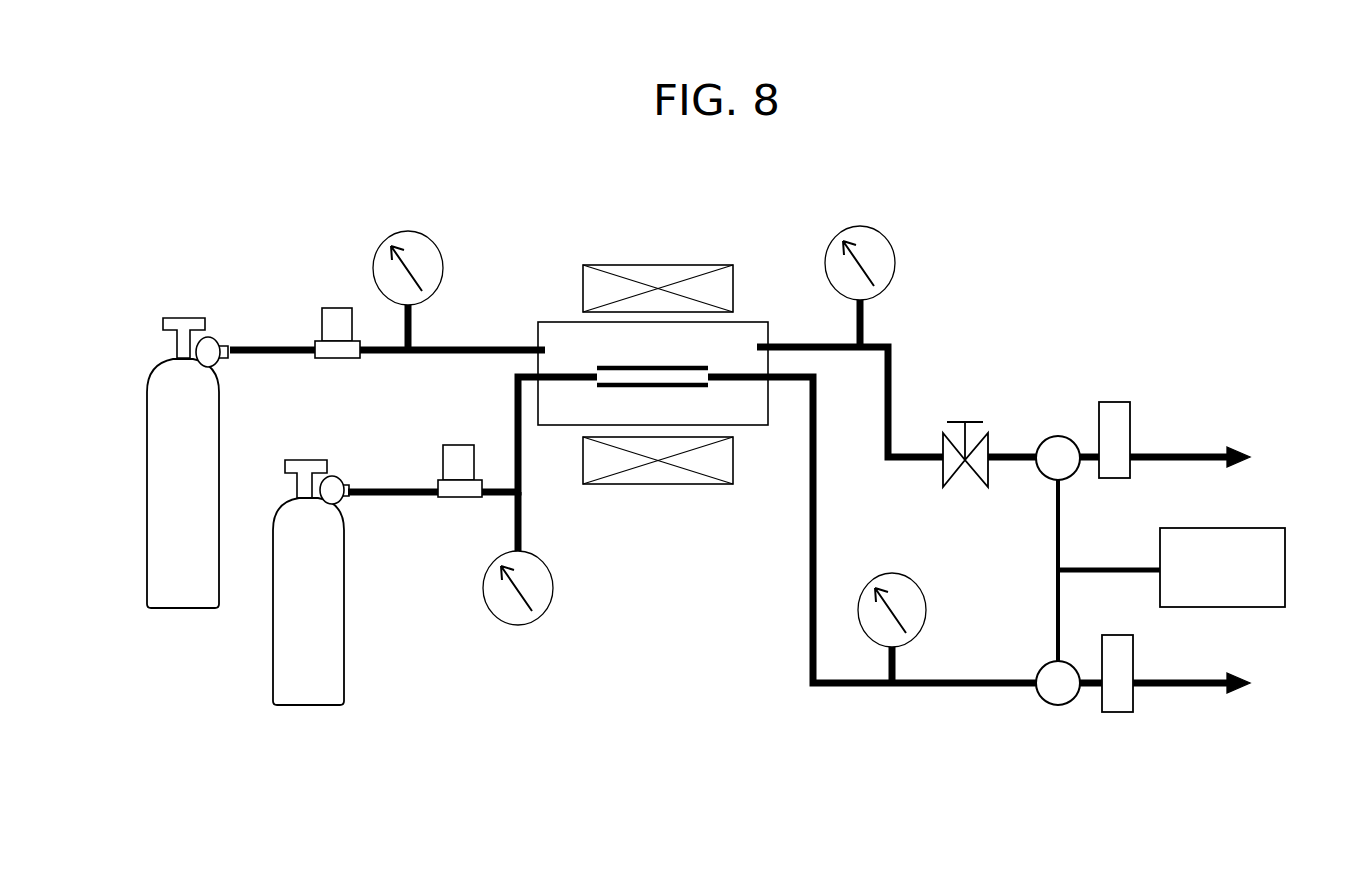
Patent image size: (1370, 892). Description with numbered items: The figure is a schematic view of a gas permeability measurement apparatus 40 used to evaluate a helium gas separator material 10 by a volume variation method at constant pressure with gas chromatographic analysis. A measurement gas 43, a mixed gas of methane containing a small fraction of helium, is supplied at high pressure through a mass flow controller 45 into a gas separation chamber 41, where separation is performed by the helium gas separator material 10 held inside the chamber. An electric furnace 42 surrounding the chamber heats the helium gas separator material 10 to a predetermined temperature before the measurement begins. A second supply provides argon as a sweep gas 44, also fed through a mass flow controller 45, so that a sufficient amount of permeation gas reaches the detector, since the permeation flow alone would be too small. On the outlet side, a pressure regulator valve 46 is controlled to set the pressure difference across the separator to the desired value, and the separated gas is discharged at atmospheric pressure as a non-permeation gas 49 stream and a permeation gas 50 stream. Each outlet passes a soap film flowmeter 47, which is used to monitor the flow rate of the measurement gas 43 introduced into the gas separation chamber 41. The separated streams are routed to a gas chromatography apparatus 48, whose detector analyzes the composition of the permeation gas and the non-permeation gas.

The helium gas separator material 10 is at (700, 365).
The gas permeability measurement apparatus 40 is at (1097, 243).
The gas separation chamber 41 is at (737, 425).
The electric furnace 42 is at (602, 485).
The measurement gas 43 is at (180, 610).
The sweep gas 44 is at (313, 707).
The mass flow controller 45 is at (333, 308).
The pressure regulator valve 46 is at (977, 418).
The soap film flowmeter 47 is at (1128, 400).
The gas chromatography apparatus 48 is at (1285, 567).
The non-permeation gas 49 is at (1261, 455).
The permeation gas 50 is at (1261, 681).